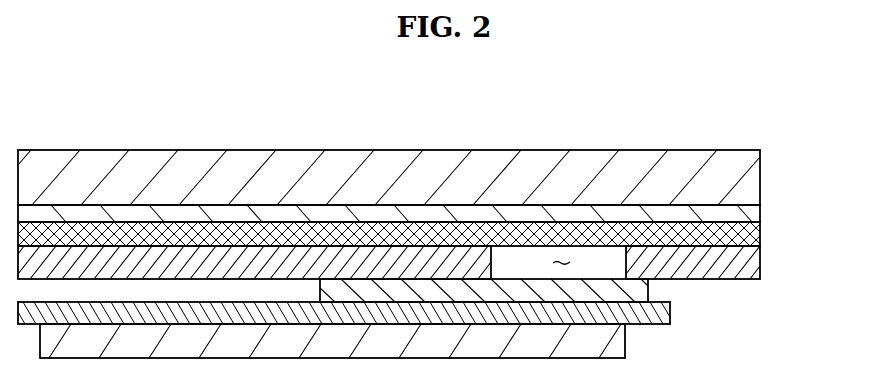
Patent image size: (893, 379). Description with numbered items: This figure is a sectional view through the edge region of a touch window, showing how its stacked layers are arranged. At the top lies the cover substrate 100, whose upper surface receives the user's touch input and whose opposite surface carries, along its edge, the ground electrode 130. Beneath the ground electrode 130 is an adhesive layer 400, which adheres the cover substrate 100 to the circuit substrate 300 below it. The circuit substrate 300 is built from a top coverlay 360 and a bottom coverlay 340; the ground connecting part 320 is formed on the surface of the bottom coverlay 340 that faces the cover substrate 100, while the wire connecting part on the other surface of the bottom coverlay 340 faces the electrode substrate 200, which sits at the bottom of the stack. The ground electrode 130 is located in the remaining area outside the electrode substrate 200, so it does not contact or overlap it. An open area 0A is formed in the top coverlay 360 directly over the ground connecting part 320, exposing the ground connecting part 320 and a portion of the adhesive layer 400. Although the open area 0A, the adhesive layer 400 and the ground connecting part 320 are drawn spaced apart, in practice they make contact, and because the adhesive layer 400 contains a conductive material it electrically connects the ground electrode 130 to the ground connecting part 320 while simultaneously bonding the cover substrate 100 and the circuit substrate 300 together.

The cover substrate 100 is at (760, 170).
The ground electrode 130 is at (760, 210).
The adhesive layer 400 is at (760, 236).
The circuit substrate 300 is at (447, 296).
The top coverlay 360 is at (760, 262).
The ground connecting part 320 is at (640, 290).
The bottom coverlay 340 is at (670, 316).
The electrode substrate 200 is at (625, 340).
The open area 0A is at (560, 262).